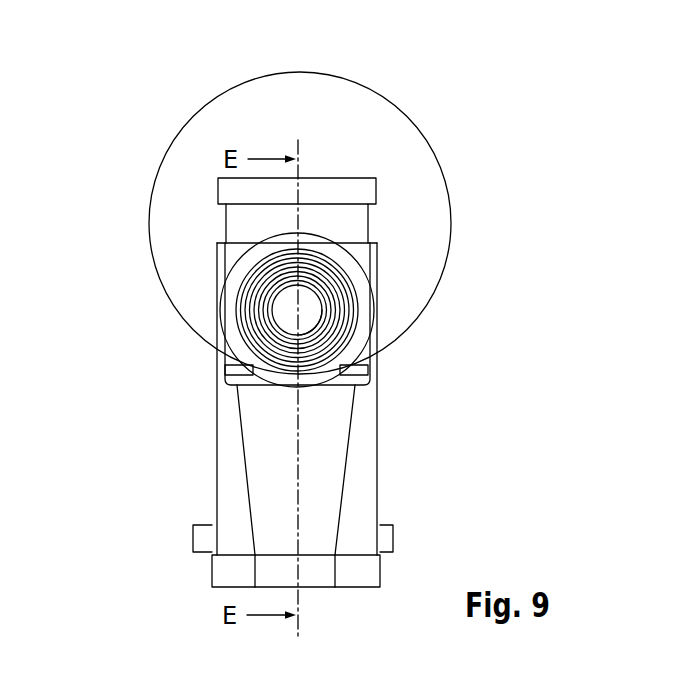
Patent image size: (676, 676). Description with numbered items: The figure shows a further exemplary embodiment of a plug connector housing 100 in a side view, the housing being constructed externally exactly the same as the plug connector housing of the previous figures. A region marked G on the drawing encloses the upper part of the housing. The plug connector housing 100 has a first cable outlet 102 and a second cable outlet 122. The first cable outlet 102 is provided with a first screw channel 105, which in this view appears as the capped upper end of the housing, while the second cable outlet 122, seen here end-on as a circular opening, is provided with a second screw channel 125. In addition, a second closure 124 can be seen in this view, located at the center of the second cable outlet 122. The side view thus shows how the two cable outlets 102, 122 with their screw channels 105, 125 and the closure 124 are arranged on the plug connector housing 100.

The region of detail G is at (225, 87).
The plug connector housing 100 is at (480, 140).
The first cable outlet 102 is at (350, 223).
The first screw channel 105 is at (320, 178).
The second cable outlet 122 is at (236, 284).
The second closure 124 is at (313, 312).
The second screw channel 125 is at (308, 328).